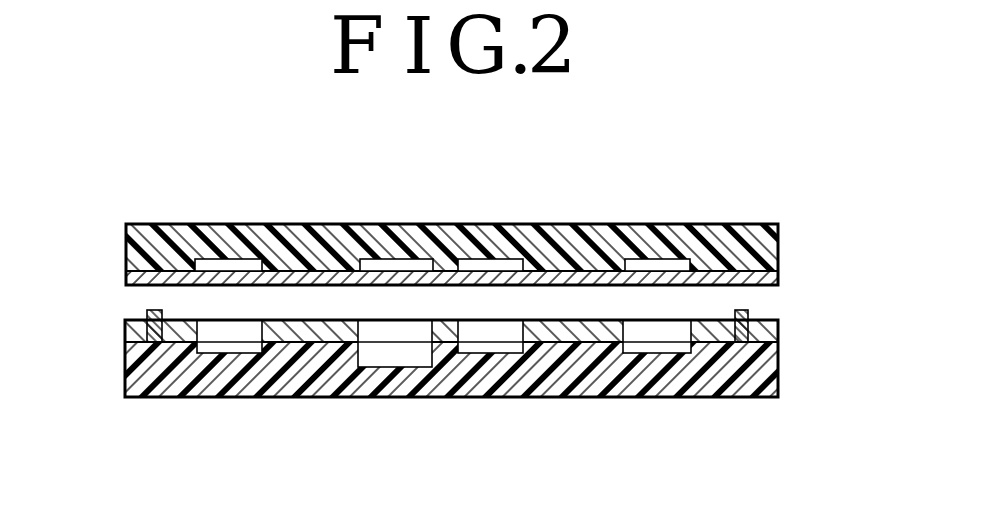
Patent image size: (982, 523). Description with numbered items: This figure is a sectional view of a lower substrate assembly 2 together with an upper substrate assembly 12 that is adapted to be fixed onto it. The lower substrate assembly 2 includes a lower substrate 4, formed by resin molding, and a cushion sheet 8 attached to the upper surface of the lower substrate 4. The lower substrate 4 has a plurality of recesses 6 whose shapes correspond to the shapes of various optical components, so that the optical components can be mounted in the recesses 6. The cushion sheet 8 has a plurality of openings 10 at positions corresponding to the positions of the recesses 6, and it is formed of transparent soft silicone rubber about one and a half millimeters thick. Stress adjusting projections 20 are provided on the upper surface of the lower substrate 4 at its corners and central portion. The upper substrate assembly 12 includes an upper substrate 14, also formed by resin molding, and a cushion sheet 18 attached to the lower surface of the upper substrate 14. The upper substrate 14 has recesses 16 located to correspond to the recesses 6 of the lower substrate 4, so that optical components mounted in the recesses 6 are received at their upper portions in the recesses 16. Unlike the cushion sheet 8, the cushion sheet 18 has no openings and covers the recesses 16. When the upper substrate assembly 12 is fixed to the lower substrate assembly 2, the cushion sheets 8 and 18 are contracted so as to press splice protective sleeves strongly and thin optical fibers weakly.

The lower substrate assembly 2 is at (503, 398).
The lower substrate 4 is at (270, 398).
The recesses 6 is at (362, 357).
The cushion sheet 8 is at (125, 328).
The openings 10 is at (365, 330).
The upper substrate assembly 12 is at (527, 225).
The upper substrate 14 is at (779, 244).
The recesses 16 is at (232, 260).
The cushion sheet 18 is at (126, 272).
The stress adjusting projections 20 is at (155, 309).